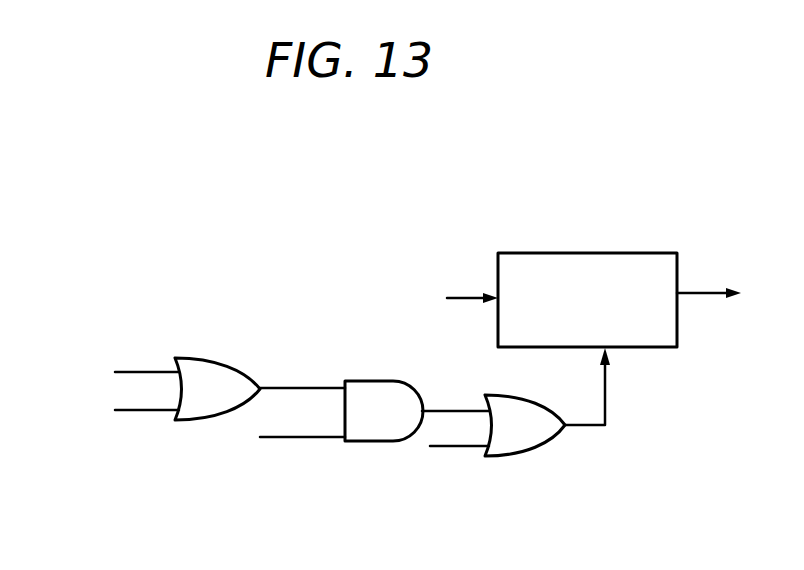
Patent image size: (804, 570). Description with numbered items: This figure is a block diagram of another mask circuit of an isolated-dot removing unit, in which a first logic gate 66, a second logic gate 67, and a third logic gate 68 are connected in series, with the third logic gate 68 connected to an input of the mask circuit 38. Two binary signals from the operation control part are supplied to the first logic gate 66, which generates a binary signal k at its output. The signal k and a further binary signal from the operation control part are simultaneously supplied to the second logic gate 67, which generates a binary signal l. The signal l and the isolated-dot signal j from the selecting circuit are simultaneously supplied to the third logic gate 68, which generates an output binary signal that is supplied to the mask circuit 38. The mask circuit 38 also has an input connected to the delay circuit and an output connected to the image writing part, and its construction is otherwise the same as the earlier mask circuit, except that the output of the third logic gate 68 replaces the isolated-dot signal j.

The mask circuit 38 is at (554, 253).
The first logic gate 66 is at (205, 421).
The second logic gate 67 is at (383, 442).
The third logic gate 68 is at (548, 445).